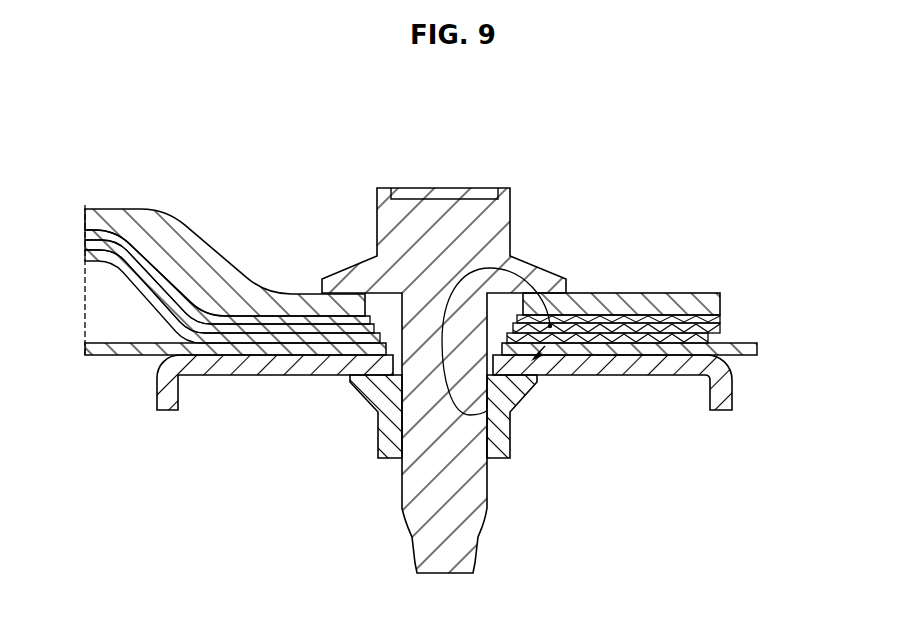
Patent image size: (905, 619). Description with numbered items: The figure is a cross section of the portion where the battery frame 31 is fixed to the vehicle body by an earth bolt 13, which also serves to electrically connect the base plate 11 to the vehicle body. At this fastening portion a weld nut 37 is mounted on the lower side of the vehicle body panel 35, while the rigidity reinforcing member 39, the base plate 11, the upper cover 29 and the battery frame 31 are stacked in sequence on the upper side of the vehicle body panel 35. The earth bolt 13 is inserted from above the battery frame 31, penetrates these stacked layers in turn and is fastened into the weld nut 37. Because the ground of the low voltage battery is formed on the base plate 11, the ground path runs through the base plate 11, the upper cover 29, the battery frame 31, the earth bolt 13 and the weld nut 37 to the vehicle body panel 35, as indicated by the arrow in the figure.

The earth bolt 13 is at (498, 217).
The battery frame 31 is at (660, 298).
The upper cover 29 is at (700, 320).
The base plate 11 is at (713, 328).
The rigidity reinforcing member 39 is at (627, 337).
The vehicle body panel 35 is at (268, 345).
The weld nut 37 is at (378, 440).